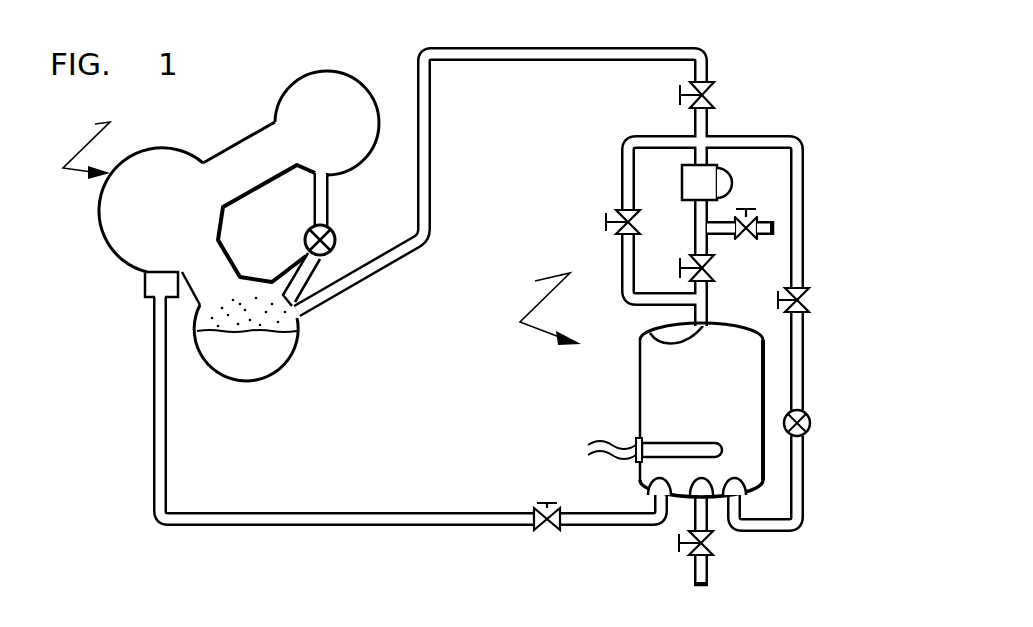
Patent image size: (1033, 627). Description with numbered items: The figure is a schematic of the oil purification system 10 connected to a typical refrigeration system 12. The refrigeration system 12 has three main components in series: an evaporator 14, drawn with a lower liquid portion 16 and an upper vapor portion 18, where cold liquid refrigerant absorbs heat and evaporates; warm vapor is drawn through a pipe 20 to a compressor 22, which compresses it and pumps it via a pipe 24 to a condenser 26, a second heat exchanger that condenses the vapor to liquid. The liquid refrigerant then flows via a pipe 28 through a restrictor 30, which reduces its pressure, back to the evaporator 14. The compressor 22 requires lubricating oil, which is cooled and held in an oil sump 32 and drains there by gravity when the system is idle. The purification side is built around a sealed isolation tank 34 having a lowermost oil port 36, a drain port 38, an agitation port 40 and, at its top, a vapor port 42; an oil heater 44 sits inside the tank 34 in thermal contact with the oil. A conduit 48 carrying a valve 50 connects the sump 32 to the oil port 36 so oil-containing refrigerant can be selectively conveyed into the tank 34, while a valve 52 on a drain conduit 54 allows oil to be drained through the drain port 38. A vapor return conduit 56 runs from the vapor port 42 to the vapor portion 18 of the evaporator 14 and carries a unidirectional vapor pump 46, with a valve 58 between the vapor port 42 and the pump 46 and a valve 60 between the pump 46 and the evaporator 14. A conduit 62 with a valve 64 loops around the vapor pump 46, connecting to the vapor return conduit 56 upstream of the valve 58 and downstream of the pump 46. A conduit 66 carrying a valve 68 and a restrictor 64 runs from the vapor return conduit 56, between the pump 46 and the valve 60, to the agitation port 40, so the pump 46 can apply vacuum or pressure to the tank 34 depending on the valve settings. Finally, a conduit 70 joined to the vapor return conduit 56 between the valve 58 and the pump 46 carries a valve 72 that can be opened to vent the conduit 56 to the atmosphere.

The oil purification system 10 is at (541, 308).
The refrigeration system 12 is at (86, 144).
The evaporator 14 is at (231, 358).
The liquid portion 16 is at (283, 348).
The vapor portion 18 is at (282, 318).
The pipe 20 is at (232, 249).
The compressor 22 is at (106, 209).
The pipe 24 is at (228, 150).
The condenser 26 is at (298, 84).
The pipe 28 is at (330, 193).
The restrictor 30 is at (337, 240).
The oil sump 32 is at (145, 284).
The isolation tank 34 is at (648, 384).
The oil port 36 is at (644, 478).
The drain port 38 is at (677, 520).
The agitation port 40 is at (727, 517).
The vapor port 42 is at (650, 337).
The oil heater 44 is at (706, 443).
The vapor pump 46 is at (694, 183).
The conduit 48 is at (277, 527).
The valve 50 is at (547, 537).
The valve 52 is at (688, 557).
The drain conduit 54 is at (707, 572).
The vapor return conduit 56 is at (581, 48).
The valve 58 is at (680, 266).
The valve 60 is at (712, 97).
The conduit 62 is at (620, 172).
The valve 64 is at (606, 222).
The conduit 66 is at (804, 366).
The valve 68 is at (806, 302).
The conduit 70 is at (766, 210).
The valve 72 is at (742, 243).